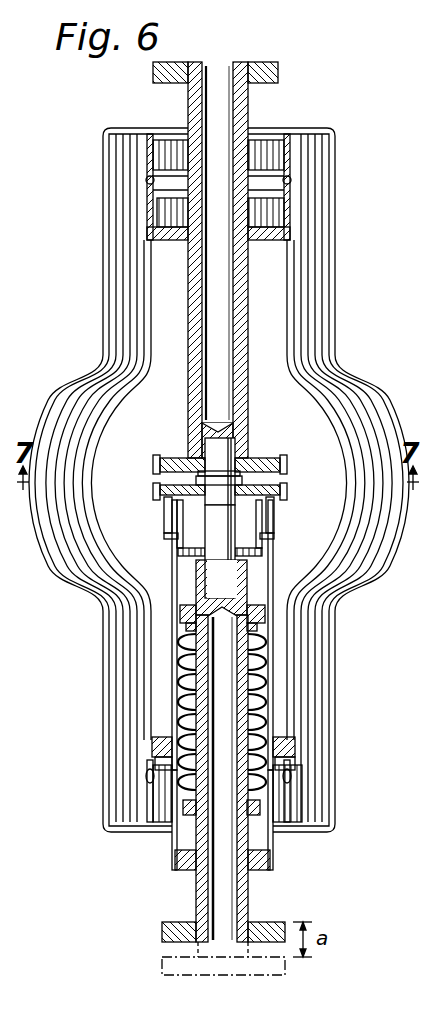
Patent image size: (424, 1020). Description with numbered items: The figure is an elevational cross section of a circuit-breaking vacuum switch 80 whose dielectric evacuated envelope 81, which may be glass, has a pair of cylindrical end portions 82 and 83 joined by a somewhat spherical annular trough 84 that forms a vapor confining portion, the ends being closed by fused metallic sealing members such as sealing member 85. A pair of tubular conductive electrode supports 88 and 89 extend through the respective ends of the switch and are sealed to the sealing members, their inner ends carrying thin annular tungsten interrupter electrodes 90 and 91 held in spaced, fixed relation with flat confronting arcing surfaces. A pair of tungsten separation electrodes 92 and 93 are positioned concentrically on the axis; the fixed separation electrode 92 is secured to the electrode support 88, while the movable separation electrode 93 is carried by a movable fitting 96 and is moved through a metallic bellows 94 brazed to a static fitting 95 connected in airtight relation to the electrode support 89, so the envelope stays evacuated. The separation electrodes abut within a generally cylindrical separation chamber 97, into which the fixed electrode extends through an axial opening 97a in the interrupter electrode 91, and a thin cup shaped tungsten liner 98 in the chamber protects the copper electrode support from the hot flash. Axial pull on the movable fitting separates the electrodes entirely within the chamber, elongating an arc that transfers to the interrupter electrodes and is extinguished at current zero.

The circuit-breaking vacuum switch 80 is at (78, 302).
The dielectric evacuated envelope 81 is at (365, 206).
The cylindrical end portion 82 is at (330, 165).
The cylindrical end portion 83 is at (337, 760).
The spherical annular trough 84 is at (292, 212).
The metallic sealing member 85 is at (298, 740).
The electrode support 88 is at (248, 120).
The electrode support 89 is at (276, 843).
The interrupter electrode 90 is at (287, 463).
The interrupter electrode 91 is at (288, 490).
The fixed separation electrode 92 is at (238, 458).
The movable separation electrode 93 is at (232, 520).
The metallic bellows 94 is at (266, 690).
The static fitting 95 is at (272, 600).
The movable fitting 96 is at (250, 893).
The separation chamber 97 is at (195, 517).
The axial opening 97a is at (200, 481).
The cup shaped liner 98 is at (177, 533).